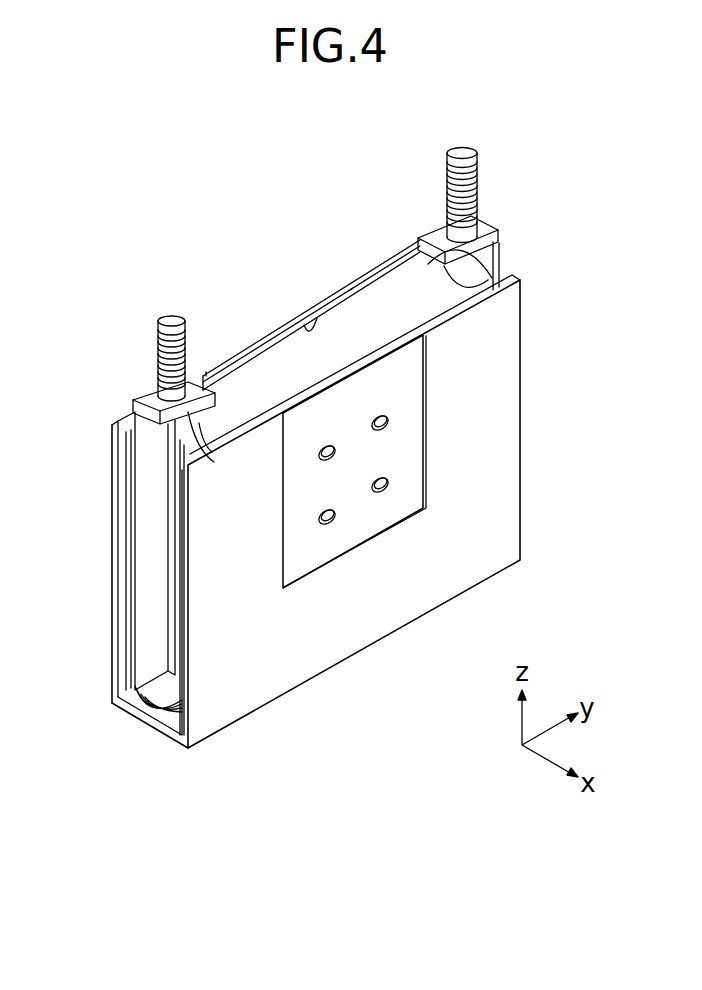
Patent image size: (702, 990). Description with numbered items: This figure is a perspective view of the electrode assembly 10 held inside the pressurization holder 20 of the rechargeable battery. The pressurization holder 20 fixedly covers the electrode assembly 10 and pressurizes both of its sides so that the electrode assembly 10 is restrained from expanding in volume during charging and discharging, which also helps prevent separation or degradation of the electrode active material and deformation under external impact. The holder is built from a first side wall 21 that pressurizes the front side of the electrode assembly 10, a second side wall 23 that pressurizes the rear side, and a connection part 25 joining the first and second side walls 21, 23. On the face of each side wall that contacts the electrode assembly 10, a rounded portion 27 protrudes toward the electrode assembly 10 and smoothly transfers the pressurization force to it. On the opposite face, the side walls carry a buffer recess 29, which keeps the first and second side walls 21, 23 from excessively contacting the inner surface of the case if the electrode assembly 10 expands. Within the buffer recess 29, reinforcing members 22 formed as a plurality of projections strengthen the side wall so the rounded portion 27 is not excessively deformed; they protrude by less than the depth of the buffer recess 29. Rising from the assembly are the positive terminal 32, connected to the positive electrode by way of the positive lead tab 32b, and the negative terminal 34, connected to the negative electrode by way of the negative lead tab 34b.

The electrode assembly 10 is at (258, 380).
The pressurization holder 20 is at (284, 581).
The first side wall 21 is at (215, 687).
The reinforcing members 22 is at (387, 430).
The second side wall 23 is at (112, 643).
The connection part 25 is at (137, 720).
The rounded portion 27 is at (317, 325).
The buffer recess 29 is at (263, 338).
The positive terminal 32 is at (158, 348).
The positive lead tab 32b is at (146, 489).
The negative terminal 34 is at (477, 190).
The negative lead tab 34b is at (493, 258).